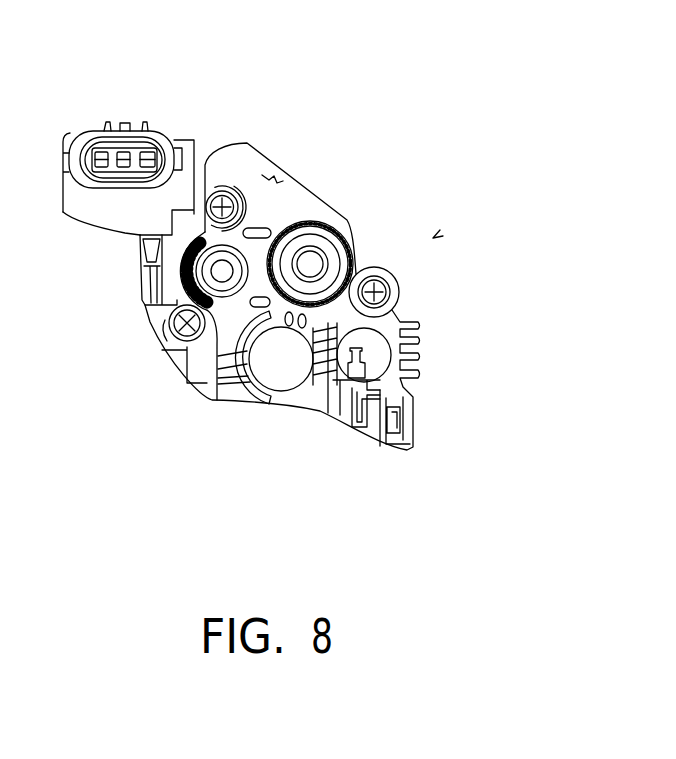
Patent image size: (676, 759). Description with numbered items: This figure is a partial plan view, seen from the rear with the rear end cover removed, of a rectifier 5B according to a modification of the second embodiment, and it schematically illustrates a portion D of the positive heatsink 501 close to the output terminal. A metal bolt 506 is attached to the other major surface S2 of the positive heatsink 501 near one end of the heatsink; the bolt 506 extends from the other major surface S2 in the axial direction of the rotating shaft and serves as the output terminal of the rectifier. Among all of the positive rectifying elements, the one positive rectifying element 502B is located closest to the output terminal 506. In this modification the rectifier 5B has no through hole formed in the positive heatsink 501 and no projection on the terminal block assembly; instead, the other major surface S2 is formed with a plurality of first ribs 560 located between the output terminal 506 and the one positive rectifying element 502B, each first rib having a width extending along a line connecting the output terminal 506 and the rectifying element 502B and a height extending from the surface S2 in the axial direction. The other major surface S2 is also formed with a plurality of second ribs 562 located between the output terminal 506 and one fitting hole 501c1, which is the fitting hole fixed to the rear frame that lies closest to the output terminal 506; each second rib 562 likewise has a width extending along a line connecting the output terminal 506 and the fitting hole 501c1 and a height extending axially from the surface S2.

The positive heatsink 501 is at (327, 212).
The fitting hole 501c1 is at (193, 140).
The positive rectifying element 502B is at (283, 370).
The bolt 506 is at (313, 267).
The first ribs 560 is at (215, 397).
The second ribs 562 is at (257, 222).
The other major surface S2 is at (268, 214).
The portion D is at (306, 208).
The rectifier 5B is at (433, 238).